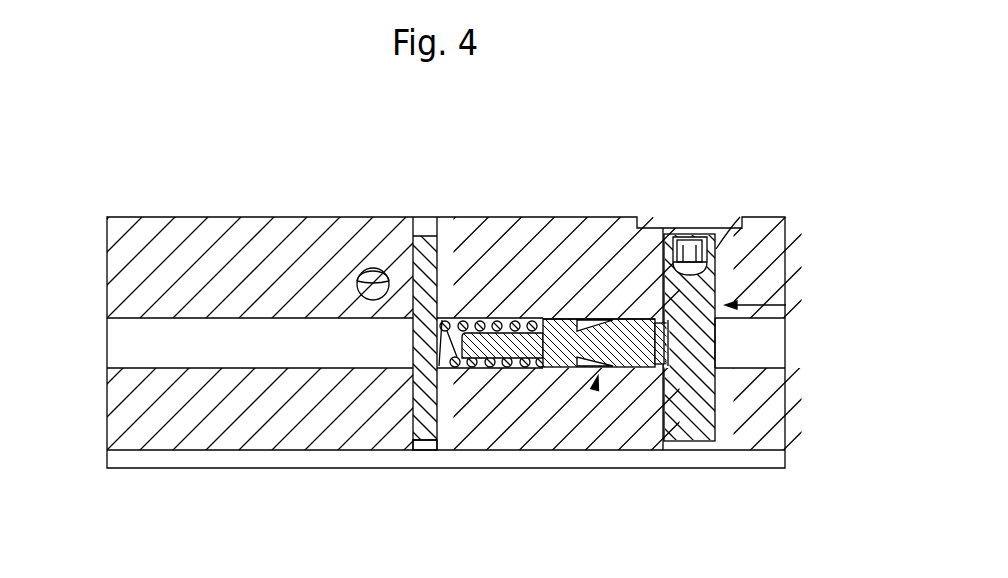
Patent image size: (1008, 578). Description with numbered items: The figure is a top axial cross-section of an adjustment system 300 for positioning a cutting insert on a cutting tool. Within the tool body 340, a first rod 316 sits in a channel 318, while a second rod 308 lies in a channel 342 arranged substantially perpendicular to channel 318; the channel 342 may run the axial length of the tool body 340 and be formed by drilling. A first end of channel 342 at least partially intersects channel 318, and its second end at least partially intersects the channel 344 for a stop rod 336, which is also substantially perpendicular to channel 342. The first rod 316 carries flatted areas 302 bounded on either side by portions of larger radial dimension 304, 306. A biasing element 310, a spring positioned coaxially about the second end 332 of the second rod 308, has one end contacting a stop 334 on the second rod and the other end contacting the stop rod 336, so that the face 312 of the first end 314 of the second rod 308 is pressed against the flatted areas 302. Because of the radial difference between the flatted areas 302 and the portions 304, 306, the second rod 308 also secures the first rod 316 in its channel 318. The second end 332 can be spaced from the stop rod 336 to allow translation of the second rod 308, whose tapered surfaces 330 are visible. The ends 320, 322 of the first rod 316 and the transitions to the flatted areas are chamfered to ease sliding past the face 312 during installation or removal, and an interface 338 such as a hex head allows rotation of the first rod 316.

The adjustment system 300 is at (753, 126).
The flatted areas 302 is at (668, 356).
The portion of larger radial dimension 304 is at (708, 262).
The portion of larger radial dimension 306 is at (708, 398).
The second rod 308 is at (594, 390).
The biasing element 310 is at (498, 365).
The face 312 is at (648, 368).
The first end 314 is at (640, 318).
The first rod 316 is at (786, 306).
The channel 318 is at (698, 236).
The end 320 is at (682, 240).
The end 322 is at (690, 442).
The tapered surfaces 330 is at (593, 325).
The second end 332 is at (512, 317).
The stop 334 is at (566, 368).
The stop rod 336 is at (426, 437).
The interface 338 is at (763, 216).
The tool body 340 is at (176, 236).
The channel 342 is at (124, 342).
The channel 344 is at (423, 222).